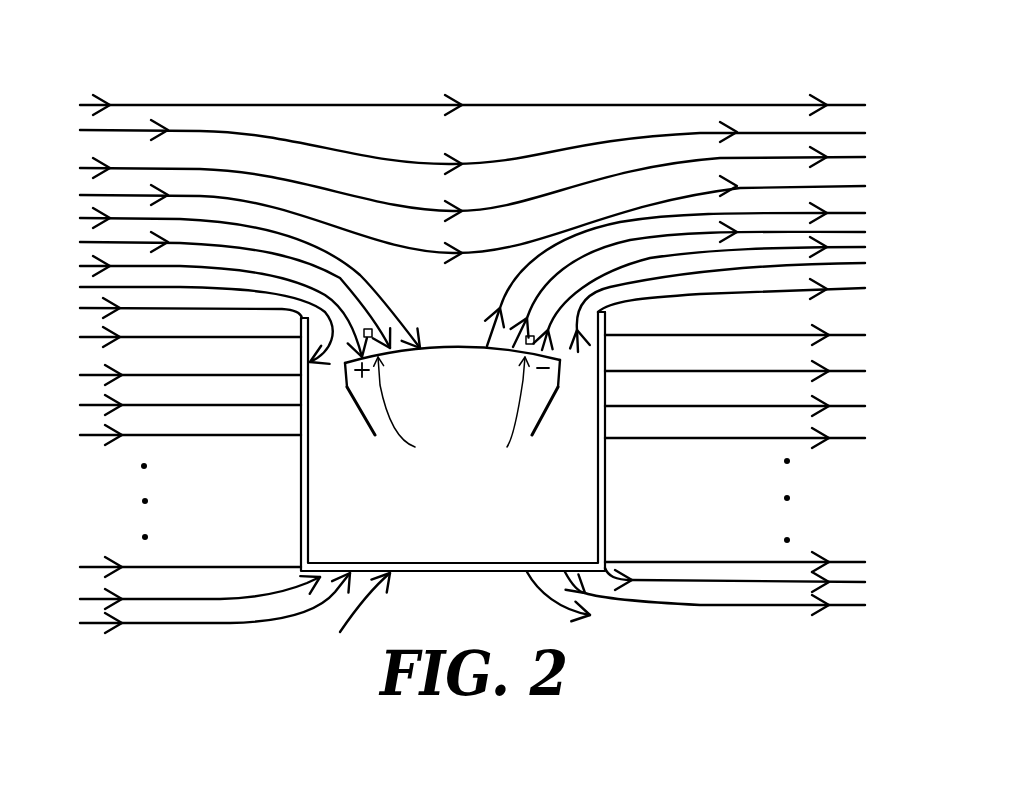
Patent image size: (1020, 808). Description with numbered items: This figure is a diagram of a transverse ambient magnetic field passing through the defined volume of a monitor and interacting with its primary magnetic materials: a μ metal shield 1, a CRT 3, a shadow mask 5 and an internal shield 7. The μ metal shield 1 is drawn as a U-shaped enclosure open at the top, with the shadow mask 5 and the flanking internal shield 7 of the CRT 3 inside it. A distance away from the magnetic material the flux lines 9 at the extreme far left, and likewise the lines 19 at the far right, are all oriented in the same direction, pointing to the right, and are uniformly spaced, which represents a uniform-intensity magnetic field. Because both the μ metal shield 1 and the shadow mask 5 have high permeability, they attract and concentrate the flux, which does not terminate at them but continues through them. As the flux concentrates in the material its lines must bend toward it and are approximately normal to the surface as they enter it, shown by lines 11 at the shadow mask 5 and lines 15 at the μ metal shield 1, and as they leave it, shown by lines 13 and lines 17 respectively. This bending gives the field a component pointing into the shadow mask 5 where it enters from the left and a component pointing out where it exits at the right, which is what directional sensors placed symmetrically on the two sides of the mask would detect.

The μ metal shield 1 is at (596, 508).
The CRT 3 is at (437, 419).
The shadow mask 5 is at (462, 352).
The internal shield 7 is at (362, 420).
The lines of flux to the far left 9 is at (208, 465).
The lines entering the material 11 is at (405, 289).
The lines leaving the material 13 is at (504, 289).
The lines entering the material 15 is at (415, 615).
The lines leaving the material 17 is at (520, 615).
The lines of flux to the far right 19 is at (748, 476).